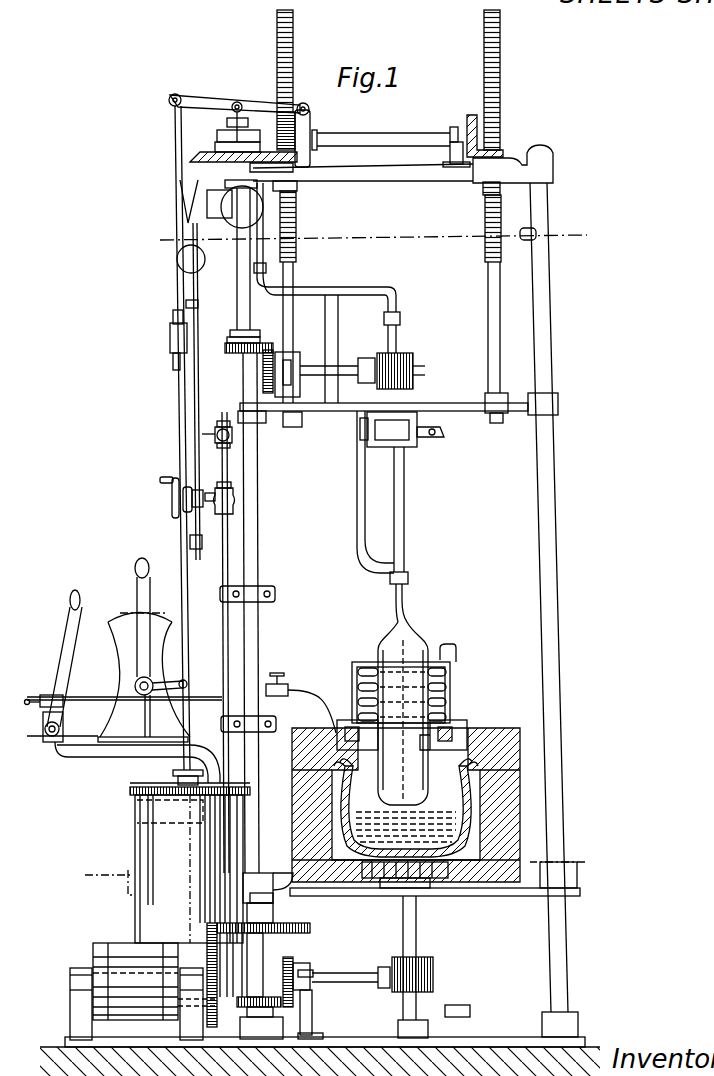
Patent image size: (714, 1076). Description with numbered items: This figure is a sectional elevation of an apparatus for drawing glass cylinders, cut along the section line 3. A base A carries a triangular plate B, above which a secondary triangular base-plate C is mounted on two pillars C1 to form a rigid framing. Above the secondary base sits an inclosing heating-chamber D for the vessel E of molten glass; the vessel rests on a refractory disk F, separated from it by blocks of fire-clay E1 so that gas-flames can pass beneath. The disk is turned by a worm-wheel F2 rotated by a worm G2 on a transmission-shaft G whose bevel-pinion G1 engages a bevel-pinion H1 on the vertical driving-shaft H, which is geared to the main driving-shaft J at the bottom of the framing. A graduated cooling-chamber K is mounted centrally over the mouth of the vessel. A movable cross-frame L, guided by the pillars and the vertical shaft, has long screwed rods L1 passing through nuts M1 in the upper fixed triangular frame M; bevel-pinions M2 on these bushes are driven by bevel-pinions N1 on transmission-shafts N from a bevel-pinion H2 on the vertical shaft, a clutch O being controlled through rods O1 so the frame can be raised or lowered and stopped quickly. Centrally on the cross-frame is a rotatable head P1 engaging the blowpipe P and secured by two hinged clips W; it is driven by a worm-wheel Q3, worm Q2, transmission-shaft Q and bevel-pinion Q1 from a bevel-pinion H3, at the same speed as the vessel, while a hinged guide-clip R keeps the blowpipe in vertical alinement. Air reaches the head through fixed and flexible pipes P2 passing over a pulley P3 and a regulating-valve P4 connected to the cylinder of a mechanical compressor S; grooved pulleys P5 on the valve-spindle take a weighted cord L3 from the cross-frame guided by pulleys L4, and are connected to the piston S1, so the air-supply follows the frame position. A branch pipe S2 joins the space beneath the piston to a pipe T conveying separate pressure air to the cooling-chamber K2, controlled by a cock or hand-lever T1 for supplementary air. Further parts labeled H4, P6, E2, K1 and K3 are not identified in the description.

The base A is at (302, 1061).
The triangular plate B is at (522, 1035).
The secondary triangular base-plate C is at (540, 896).
The pillars C1 is at (562, 955).
The section line 3 is at (333, 865).
The clutch O is at (240, 105).
The rods O1 is at (176, 286).
The transmission-shafts N is at (290, 140).
The bevel-pinions N1 is at (468, 135).
The upper fixed triangular frame M is at (367, 138).
The nuts M1 is at (522, 180).
The bevel-pinions M2 is at (497, 155).
The cross-frame L is at (486, 262).
The long screwed rods L1 is at (543, 236).
The weighted cord L3 is at (170, 345).
The pulleys L4 is at (177, 258).
The vertical driving-shaft H is at (243, 300).
The bevel-pinion H1 is at (72, 985).
The bevel-pinion H2 is at (228, 195).
The bevel-pinion H3 is at (258, 375).
The bevel gear band H4 is at (283, 990).
The blowpipe P is at (404, 497).
The rotatable head P1 is at (440, 433).
The fixed and flexible pipes P2 is at (378, 292).
The pulley P3 is at (225, 205).
The regulating-valve P4 is at (215, 436).
The grooved pulleys P5 is at (172, 500).
The pipe fitting P6 is at (223, 305).
The transmission-shaft Q is at (300, 424).
The bevel-pinion Q1 is at (238, 414).
The worm Q2 is at (190, 541).
The worm-wheel Q3 is at (410, 368).
The hinged clips W is at (405, 447).
The hinged guide-clip R is at (406, 570).
The vessel E is at (472, 800).
The blocks of fire-clay E1 is at (440, 832).
The pipe E2 is at (357, 478).
The inclosing heating-chamber D is at (510, 742).
The graduated cooling-chamber K is at (428, 680).
The cooling jacket K1 is at (420, 662).
The graduated cooling-chamber K2 is at (452, 722).
The flange with inlet K3 is at (466, 735).
The pipe T is at (124, 666).
The cock or hand-lever T1 is at (127, 593).
The mechanical compressor S is at (160, 863).
The piston S1 is at (140, 802).
The branch pipe S2 is at (118, 752).
The main driving-shaft J is at (108, 958).
The disk F is at (422, 965).
The worm-wheel F2 is at (406, 900).
The transmission-shaft G is at (348, 983).
The bevel-pinion G1 is at (310, 975).
The worm G2 is at (422, 998).